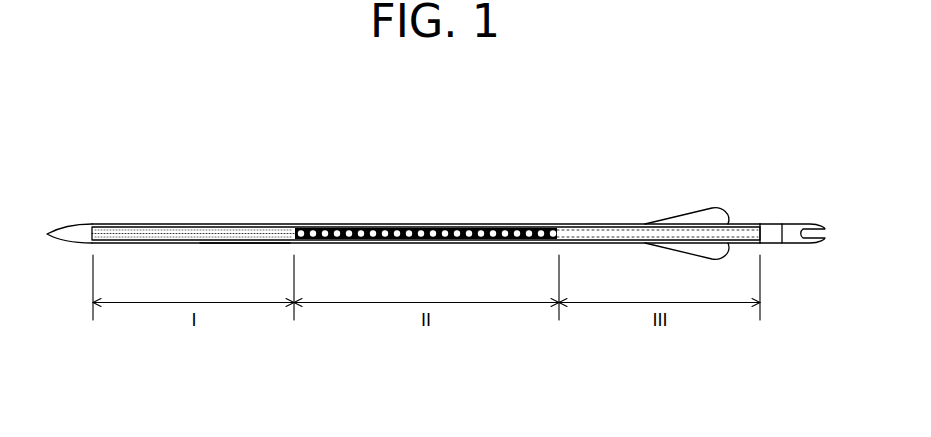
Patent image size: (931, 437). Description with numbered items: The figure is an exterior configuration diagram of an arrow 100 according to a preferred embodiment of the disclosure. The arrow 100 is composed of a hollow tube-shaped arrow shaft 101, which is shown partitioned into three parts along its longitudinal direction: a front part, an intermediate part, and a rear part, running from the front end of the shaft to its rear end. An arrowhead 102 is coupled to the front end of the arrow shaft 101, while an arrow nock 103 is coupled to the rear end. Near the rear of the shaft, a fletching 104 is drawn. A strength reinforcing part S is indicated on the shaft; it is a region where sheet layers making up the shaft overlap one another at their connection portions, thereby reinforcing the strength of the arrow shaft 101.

The arrow 100 is at (458, 158).
The arrow shaft 101 is at (203, 232).
The arrowhead 102 is at (82, 231).
The arrow nock 103 is at (790, 228).
The fletching 104 is at (713, 214).
The strength reinforcing part S is at (241, 243).